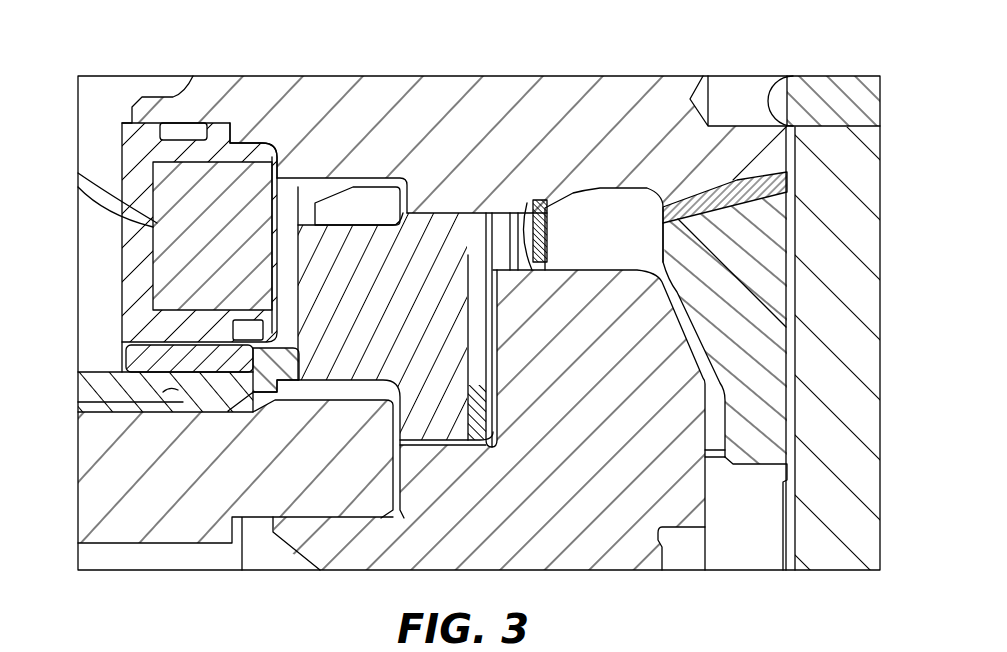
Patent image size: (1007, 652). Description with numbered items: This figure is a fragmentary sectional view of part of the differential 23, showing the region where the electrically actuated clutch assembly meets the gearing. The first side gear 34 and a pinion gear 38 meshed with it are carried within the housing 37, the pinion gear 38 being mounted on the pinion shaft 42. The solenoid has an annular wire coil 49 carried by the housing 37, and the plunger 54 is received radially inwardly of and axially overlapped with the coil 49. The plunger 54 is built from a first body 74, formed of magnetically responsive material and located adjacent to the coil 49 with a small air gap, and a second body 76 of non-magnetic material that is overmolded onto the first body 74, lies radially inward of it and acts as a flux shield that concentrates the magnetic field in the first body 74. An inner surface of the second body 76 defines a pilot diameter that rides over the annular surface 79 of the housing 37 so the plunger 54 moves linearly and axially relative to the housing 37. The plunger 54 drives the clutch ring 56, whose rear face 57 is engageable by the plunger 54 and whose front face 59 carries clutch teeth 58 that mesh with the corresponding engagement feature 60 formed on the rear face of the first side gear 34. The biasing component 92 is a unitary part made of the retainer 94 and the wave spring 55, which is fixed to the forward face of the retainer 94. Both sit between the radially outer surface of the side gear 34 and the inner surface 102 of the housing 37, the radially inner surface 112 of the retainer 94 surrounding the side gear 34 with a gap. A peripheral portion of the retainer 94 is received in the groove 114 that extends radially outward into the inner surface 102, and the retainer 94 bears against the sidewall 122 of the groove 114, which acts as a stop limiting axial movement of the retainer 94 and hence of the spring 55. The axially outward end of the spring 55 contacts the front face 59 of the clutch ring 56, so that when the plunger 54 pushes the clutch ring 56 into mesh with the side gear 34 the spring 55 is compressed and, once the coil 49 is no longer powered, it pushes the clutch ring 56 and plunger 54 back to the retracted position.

The differential 23 is at (895, 134).
The first side gear 34 is at (607, 532).
The housing 37 is at (523, 92).
The pinion gear 38 is at (758, 377).
The pinion shaft 42 is at (848, 530).
The annular wire coil 49 is at (168, 197).
The plunger 54 is at (90, 372).
The spring 55 is at (522, 203).
The clutch ring 56 is at (377, 247).
The rear face 57 is at (293, 260).
The clutch teeth 58 is at (475, 362).
The front face 59 is at (485, 343).
The engagement feature 60 is at (500, 378).
The first body 74 is at (180, 340).
The second body 76 is at (100, 390).
The surface 79 is at (170, 392).
The biasing component 92 is at (627, 219).
The retainer 94 is at (545, 222).
The inner surface 102 is at (488, 217).
The radially inner surface 112 is at (604, 229).
The groove 114 is at (542, 205).
The sidewall 122 is at (537, 278).